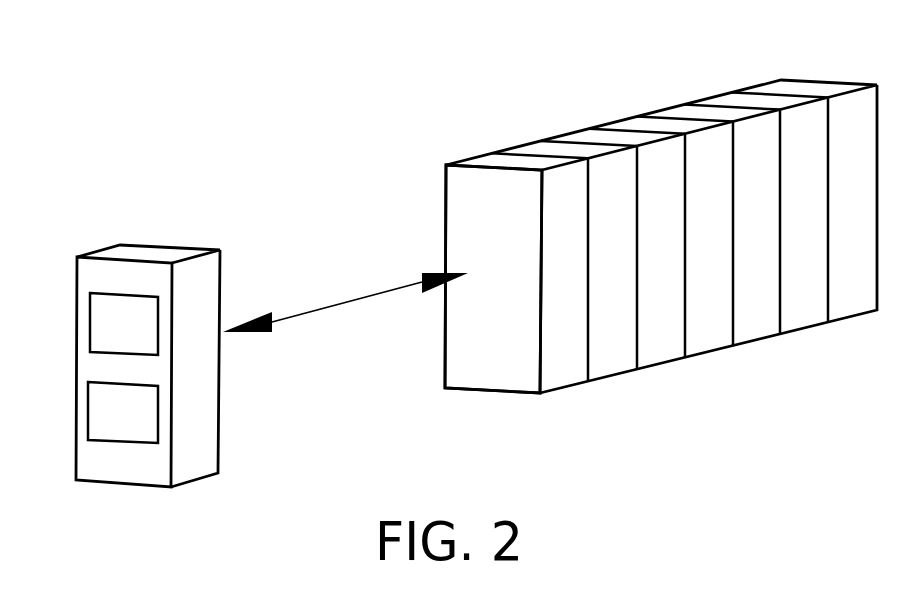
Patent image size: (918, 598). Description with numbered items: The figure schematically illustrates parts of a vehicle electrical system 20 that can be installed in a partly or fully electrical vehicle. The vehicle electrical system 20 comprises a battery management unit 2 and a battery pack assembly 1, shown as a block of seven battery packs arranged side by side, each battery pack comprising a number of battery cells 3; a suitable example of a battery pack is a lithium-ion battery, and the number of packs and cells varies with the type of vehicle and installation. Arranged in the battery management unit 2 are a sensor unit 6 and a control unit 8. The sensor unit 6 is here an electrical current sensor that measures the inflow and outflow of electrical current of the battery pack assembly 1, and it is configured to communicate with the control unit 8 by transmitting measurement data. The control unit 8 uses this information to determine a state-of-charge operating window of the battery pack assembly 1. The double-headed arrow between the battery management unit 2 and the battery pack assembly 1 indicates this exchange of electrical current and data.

The vehicle electrical system 20 is at (240, 63).
The battery pack assembly 1 is at (566, 78).
The battery cells 3 is at (563, 330).
The battery management unit 2 is at (193, 420).
The control unit 8 is at (122, 325).
The sensor unit 6 is at (122, 412).